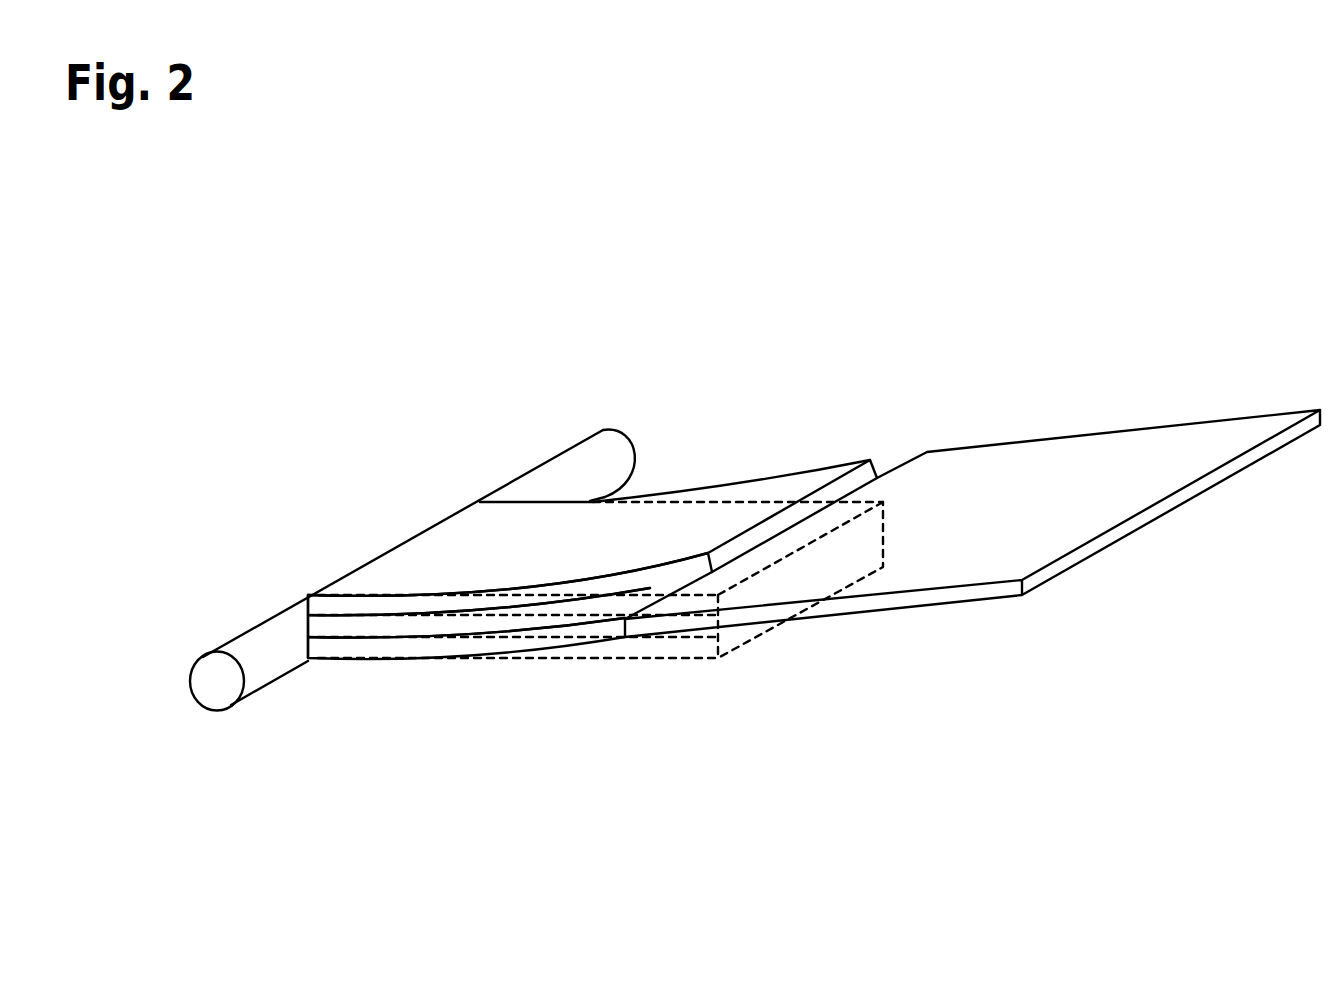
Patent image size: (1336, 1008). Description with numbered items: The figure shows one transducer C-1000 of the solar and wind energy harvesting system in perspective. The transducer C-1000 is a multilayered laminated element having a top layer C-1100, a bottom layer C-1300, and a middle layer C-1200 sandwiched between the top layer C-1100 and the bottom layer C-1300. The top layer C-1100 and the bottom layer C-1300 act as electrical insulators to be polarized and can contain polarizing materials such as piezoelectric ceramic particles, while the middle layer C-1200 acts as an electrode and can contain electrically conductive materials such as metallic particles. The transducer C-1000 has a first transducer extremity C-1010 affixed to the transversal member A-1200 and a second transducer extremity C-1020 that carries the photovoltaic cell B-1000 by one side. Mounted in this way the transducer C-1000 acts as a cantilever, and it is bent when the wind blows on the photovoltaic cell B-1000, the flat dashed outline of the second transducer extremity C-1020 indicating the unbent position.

The photovoltaic cell B-1000 is at (1083, 433).
The second transducer extremity C-1020 is at (803, 500).
The transducer C-1000 is at (533, 659).
The top layer C-1100 is at (338, 595).
The middle layer C-1200 is at (387, 625).
The bottom layer C-1300 is at (410, 658).
The first transducer extremity C-1010 is at (412, 530).
The transversal member A-1200 is at (578, 468).